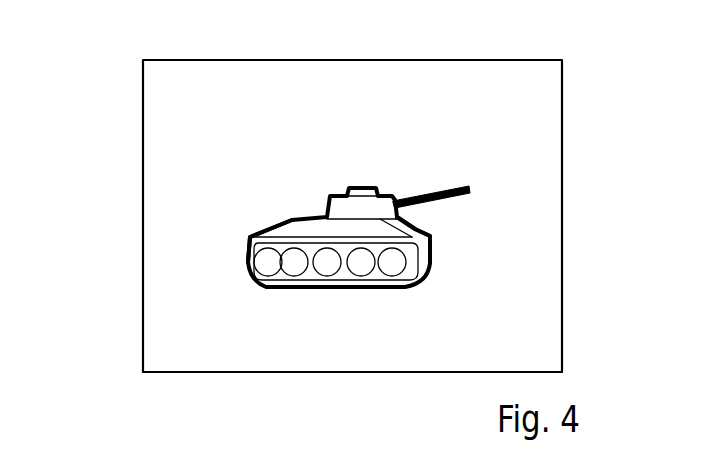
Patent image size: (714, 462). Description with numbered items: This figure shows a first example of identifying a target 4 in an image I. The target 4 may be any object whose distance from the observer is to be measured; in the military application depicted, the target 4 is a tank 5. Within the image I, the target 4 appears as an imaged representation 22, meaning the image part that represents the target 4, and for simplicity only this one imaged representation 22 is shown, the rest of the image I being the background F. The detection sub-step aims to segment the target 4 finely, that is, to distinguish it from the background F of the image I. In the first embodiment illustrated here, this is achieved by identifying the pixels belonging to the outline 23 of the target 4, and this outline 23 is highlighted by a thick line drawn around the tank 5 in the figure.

The target 4 is at (350, 174).
The background F is at (166, 166).
The image I is at (370, 373).
The tank 5 is at (240, 288).
The outline 23 is at (250, 237).
The imaged representation 22 is at (409, 223).